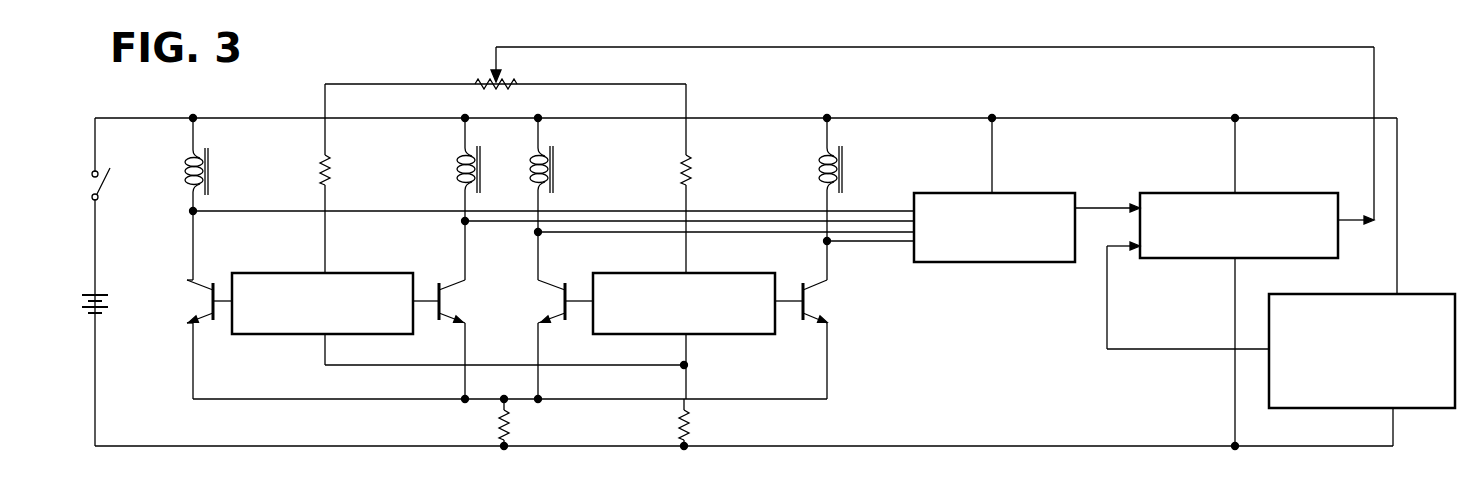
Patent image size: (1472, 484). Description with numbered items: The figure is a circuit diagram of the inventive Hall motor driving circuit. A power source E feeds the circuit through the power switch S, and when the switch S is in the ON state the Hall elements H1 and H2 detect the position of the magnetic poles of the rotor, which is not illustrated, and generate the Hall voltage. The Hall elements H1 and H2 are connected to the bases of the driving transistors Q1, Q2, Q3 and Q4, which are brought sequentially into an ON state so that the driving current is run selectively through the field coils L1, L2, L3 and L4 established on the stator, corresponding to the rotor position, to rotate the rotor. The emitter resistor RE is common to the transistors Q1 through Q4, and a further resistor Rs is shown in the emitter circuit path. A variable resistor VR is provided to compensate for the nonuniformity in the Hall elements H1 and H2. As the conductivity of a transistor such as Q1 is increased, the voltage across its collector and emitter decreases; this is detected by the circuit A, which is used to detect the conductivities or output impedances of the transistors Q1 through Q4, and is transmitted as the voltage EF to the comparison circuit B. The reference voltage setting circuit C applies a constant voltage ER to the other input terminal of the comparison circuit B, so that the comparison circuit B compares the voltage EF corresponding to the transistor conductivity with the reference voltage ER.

The power switch S is at (108, 182).
The battery / power source E is at (112, 306).
The field coil L1 is at (212, 176).
The field coil L2 is at (484, 176).
The field coil L3 is at (557, 176).
The field coil L4 is at (846, 176).
The variable resistor VR is at (490, 74).
The driving transistor Q1 is at (209, 302).
The driving transistor Q2 is at (455, 295).
The driving transistor Q3 is at (556, 305).
The driving transistor Q4 is at (817, 298).
The Hall element H1 is at (378, 273).
The Hall element H2 is at (727, 334).
The emitter resistor RE is at (509, 422).
The resistor Rs is at (689, 420).
The conductivity detecting circuit A is at (1035, 193).
The comparison circuit B is at (1292, 192).
The reference voltage setting circuit C is at (1421, 294).
The detected conductivity voltage EF is at (1107, 197).
The reference voltage ER is at (1188, 284).